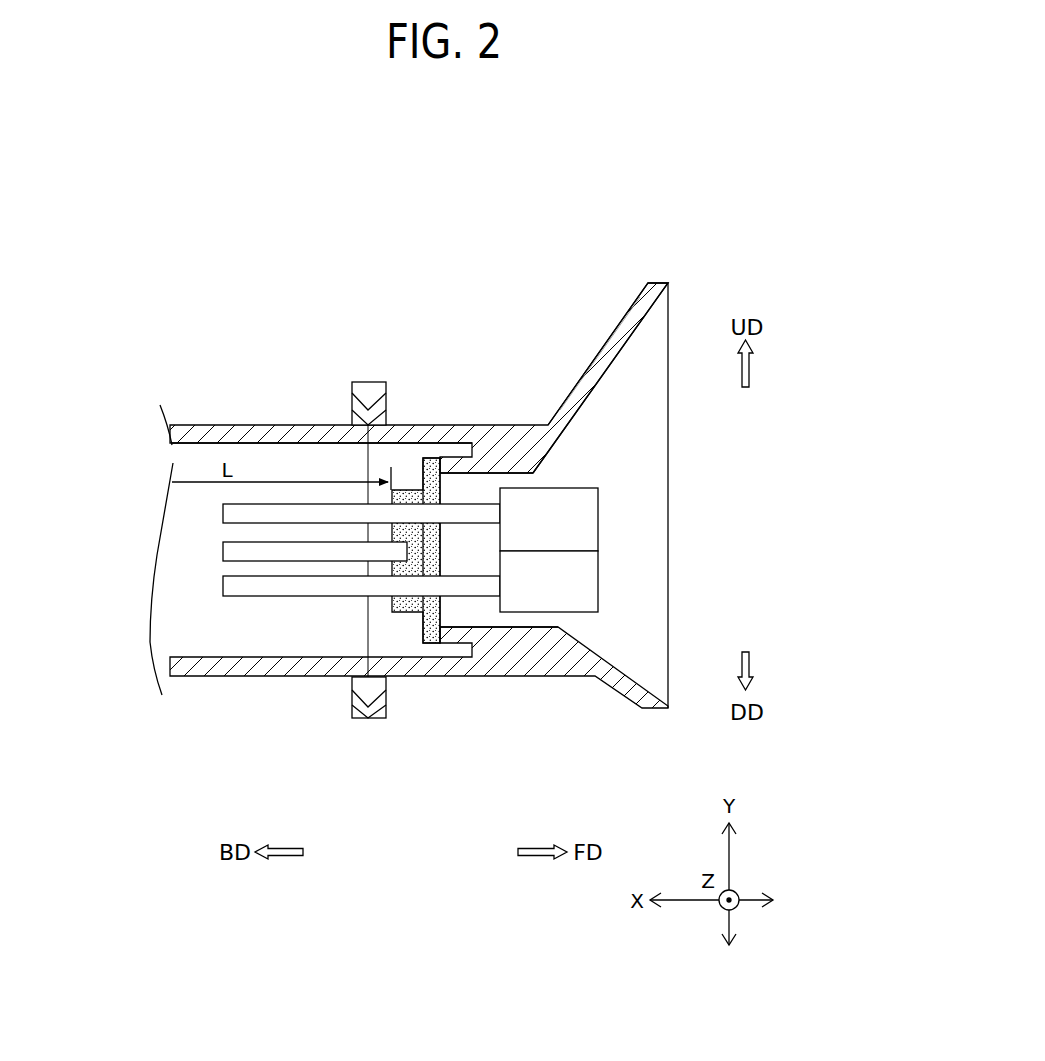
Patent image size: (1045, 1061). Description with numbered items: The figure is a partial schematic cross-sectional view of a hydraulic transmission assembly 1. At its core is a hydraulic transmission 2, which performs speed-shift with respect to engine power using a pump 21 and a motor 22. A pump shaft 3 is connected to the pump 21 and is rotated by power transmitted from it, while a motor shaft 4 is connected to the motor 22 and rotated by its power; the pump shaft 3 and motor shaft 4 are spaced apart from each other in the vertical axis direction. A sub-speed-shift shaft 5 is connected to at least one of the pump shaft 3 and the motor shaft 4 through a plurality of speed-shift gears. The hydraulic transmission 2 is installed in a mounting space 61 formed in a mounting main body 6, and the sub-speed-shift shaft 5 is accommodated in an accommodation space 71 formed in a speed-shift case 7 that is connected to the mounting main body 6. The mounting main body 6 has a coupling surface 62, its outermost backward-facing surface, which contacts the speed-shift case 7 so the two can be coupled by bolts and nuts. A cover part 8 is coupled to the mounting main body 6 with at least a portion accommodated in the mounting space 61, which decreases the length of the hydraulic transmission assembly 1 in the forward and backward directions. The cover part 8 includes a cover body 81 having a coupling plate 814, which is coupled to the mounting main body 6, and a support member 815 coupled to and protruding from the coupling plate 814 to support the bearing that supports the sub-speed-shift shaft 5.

The hydraulic transmission assembly 1 is at (137, 287).
The hydraulic transmission 2 is at (743, 515).
The pump 21 is at (598, 517).
The motor 22 is at (598, 580).
The pump shaft 3 is at (483, 510).
The motor shaft 4 is at (470, 588).
The sub-speed-shift shaft 5 is at (303, 550).
The mounting main body 6 is at (600, 370).
The mounting space 61 is at (636, 375).
The coupling surface 62 is at (350, 410).
The speed-shift case 7 is at (218, 432).
The accommodation space 71 is at (290, 458).
The cover part 8 is at (425, 793).
The cover body 81 is at (468, 750).
The coupling plate 814 is at (430, 630).
The support member 815 is at (412, 613).